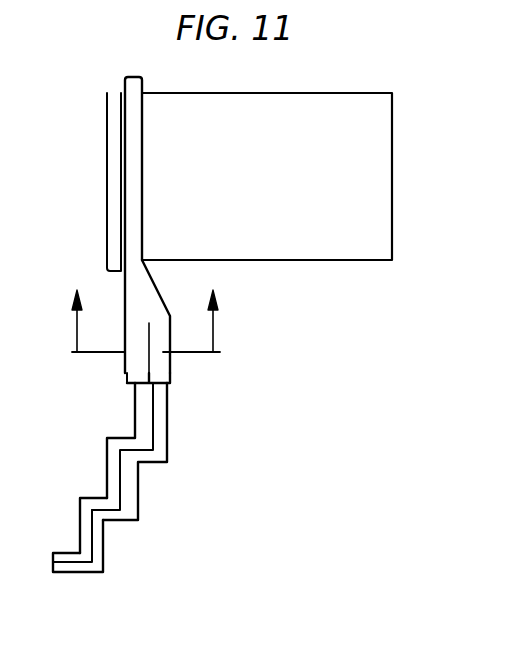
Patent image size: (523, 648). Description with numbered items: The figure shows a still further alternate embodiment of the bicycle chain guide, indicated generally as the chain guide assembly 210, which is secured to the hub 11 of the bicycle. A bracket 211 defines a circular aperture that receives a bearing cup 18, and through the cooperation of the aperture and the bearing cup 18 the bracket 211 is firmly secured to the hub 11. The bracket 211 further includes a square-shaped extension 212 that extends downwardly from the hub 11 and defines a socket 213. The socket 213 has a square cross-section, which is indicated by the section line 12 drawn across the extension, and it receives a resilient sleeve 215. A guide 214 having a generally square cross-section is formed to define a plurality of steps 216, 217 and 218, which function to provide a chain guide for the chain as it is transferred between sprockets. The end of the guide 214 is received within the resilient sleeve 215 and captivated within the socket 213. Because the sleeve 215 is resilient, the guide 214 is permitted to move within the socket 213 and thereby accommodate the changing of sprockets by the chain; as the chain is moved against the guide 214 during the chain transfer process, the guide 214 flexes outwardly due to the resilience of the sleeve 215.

The hub 11 is at (326, 118).
The section line 12- 12 is at (140, 310).
The bearing cup 18 is at (107, 158).
The chain guide assembly 210 is at (227, 373).
The bracket 211 is at (142, 168).
The square-shaped extension 212 is at (157, 302).
The socket 213 is at (172, 384).
The guide 214 is at (143, 493).
The resilient sleeve 215 is at (130, 384).
The step 216 is at (122, 437).
The step 217 is at (95, 495).
The step 218 is at (68, 553).